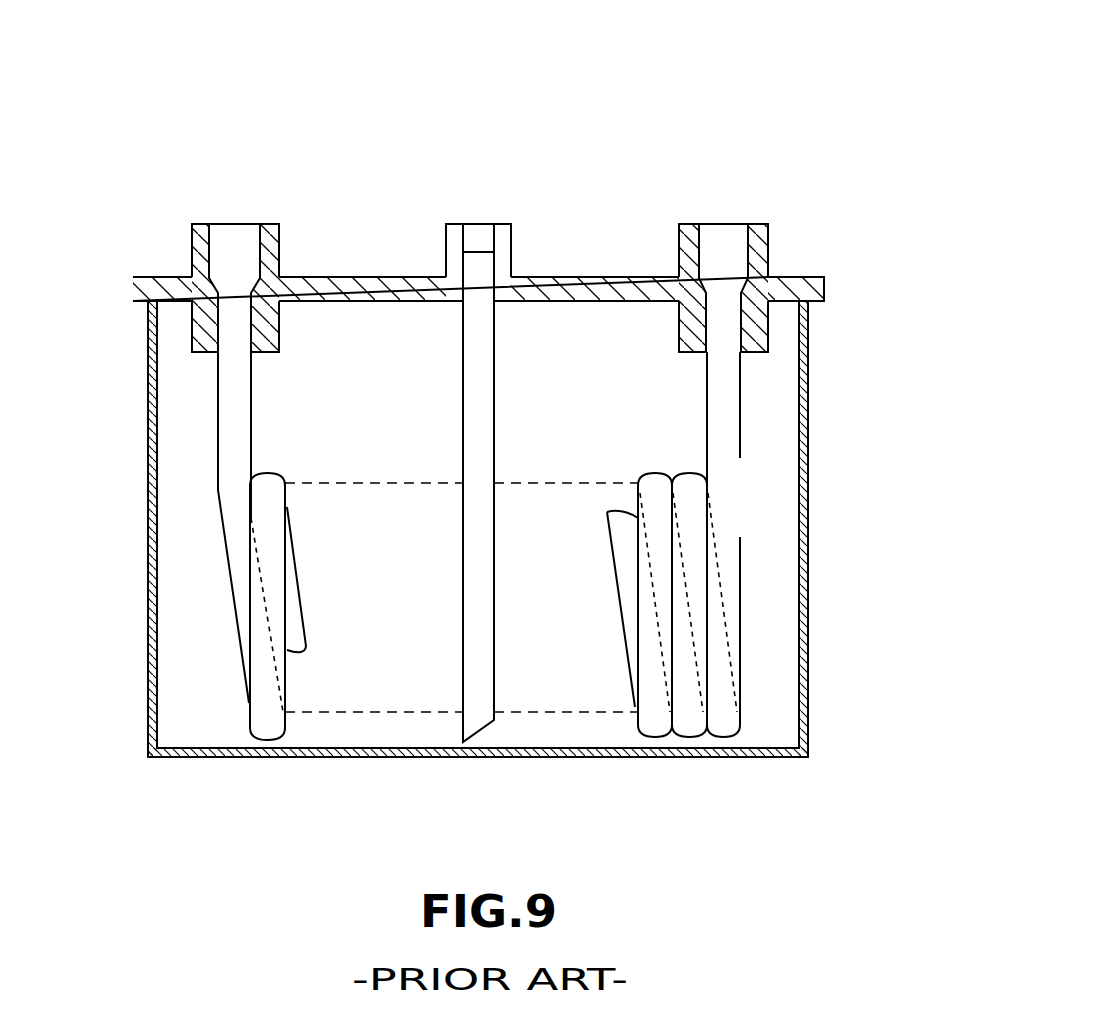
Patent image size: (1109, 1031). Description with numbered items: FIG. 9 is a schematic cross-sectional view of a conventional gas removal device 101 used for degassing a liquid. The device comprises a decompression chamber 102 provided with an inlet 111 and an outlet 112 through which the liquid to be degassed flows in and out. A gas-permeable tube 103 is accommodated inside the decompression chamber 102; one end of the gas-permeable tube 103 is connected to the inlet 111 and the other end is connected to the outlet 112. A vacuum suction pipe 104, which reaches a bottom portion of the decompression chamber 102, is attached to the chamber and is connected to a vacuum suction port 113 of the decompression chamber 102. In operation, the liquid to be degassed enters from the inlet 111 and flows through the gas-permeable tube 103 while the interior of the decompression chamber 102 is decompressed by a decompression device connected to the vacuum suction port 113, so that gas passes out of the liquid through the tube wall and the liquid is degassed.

The gas removal device 101 is at (774, 81).
The decompression chamber 102 is at (851, 291).
The gas-permeable tube 103 is at (228, 390).
The vacuum suction pipe 104 is at (475, 378).
The inlet 111 is at (284, 201).
The outlet 112 is at (772, 204).
The vacuum suction port 113 is at (532, 202).